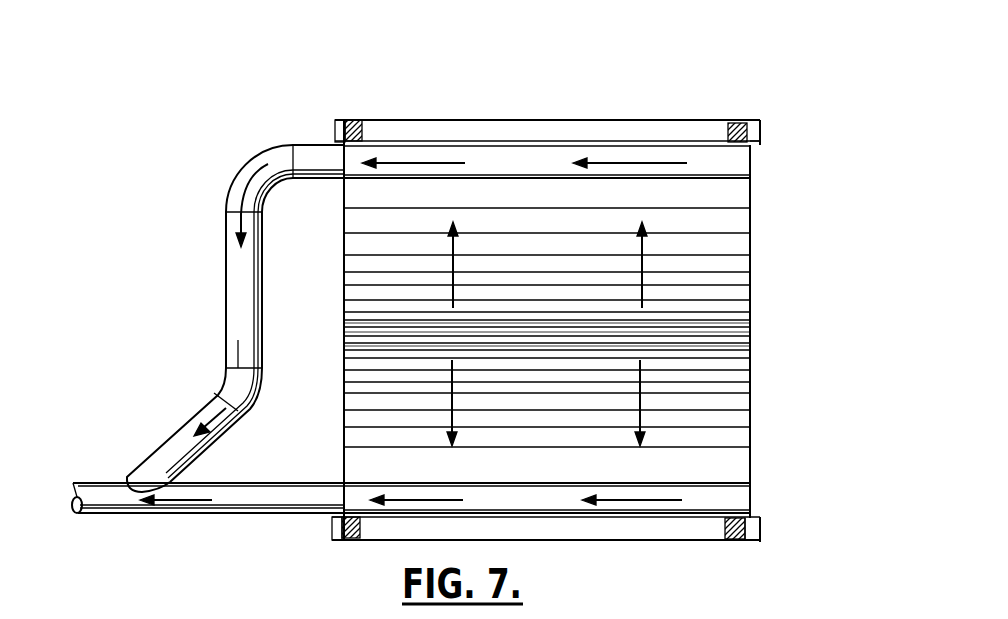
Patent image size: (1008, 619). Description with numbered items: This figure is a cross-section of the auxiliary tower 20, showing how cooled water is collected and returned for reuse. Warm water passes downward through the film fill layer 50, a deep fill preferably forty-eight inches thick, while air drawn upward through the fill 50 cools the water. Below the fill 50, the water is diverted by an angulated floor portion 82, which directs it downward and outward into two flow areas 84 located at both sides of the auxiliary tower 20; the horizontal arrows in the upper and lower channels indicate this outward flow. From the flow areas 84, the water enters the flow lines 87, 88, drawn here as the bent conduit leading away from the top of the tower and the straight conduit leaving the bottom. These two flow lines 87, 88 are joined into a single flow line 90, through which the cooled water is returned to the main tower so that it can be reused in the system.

The auxiliary tower 20 is at (768, 265).
The film fill layer 50 is at (602, 300).
The angulated floor portion 82 is at (437, 483).
The flow areas 84 is at (522, 162).
The flow line 87 is at (318, 160).
The flow line 88 is at (321, 499).
The single flow line 90 is at (93, 497).